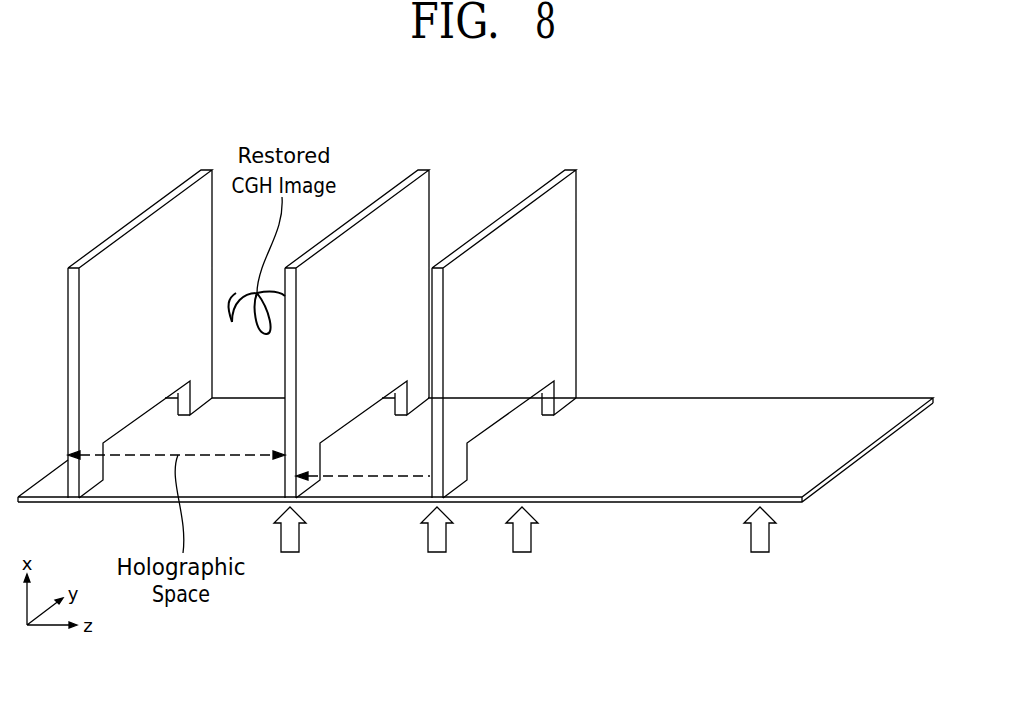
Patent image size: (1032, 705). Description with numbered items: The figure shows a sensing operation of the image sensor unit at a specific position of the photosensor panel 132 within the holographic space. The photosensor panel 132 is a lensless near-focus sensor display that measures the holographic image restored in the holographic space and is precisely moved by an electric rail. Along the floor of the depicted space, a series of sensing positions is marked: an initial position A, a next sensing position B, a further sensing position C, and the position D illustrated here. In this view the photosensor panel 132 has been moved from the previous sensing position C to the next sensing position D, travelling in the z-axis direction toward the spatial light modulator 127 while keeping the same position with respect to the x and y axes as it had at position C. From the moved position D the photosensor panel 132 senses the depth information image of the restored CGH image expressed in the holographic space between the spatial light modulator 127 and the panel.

The spatial light modulator 127 is at (205, 170).
The photosensor panel 132 is at (420, 168).
The initial position A is at (760, 545).
The sensing position B is at (522, 545).
The sensing position C is at (437, 545).
The sensing position D is at (290, 545).